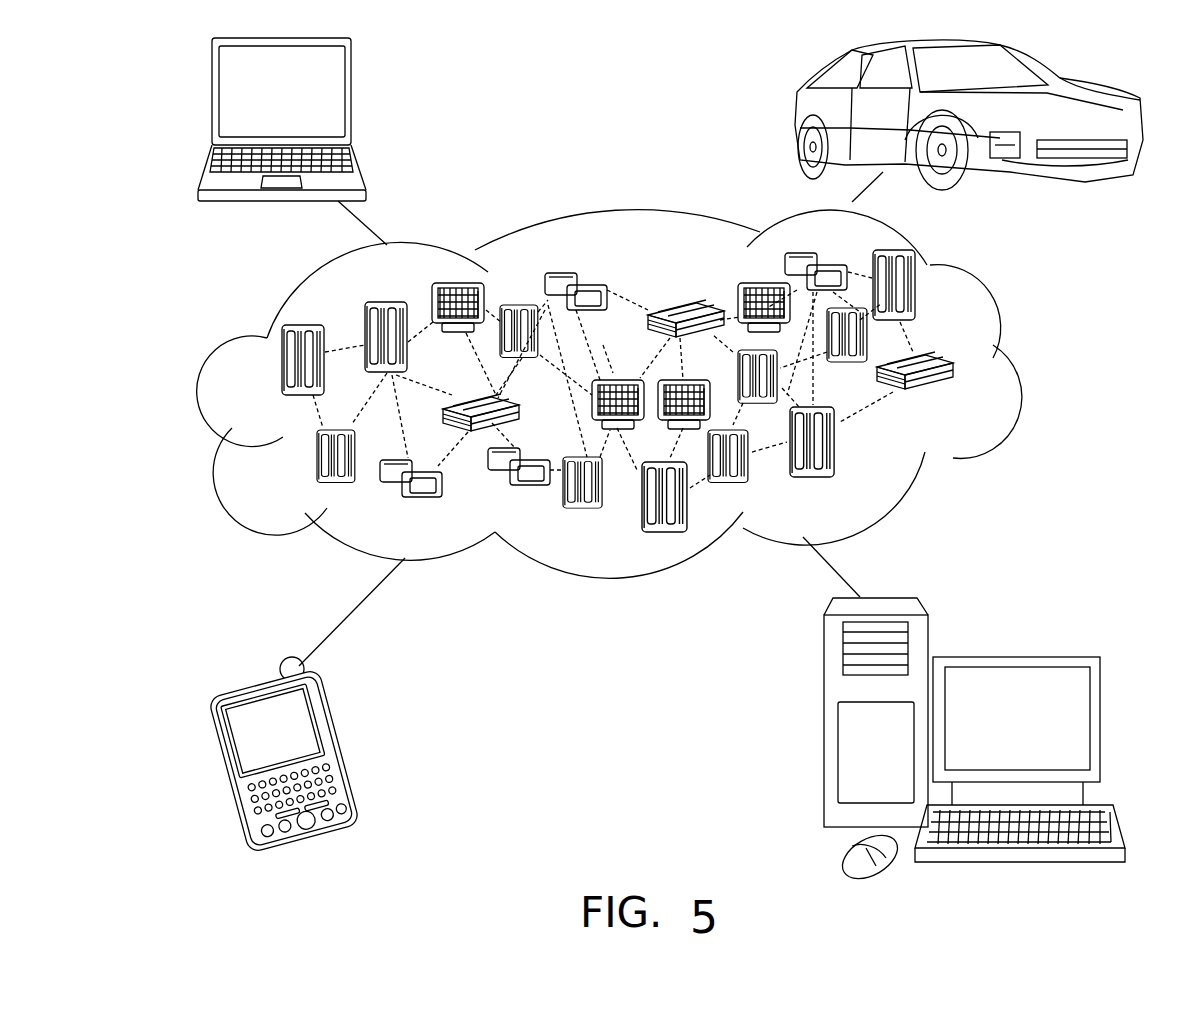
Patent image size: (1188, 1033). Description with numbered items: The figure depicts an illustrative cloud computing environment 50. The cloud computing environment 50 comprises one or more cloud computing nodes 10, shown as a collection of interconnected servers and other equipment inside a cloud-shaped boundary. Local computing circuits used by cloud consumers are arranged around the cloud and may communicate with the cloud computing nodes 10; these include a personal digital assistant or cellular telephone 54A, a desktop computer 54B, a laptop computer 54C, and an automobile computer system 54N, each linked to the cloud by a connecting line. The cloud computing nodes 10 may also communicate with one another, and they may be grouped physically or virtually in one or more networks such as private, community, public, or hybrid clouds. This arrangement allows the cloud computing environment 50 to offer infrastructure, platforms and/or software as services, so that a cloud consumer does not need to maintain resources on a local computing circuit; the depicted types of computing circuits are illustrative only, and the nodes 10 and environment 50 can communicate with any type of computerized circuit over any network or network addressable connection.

The cloud computing node 10 is at (965, 402).
The cloud computing environment 50 is at (636, 394).
The personal digital assistant or cellular telephone 54A is at (341, 750).
The desktop computer 54B is at (1015, 655).
The laptop computer 54C is at (352, 101).
The automobile computer system 54N is at (795, 118).